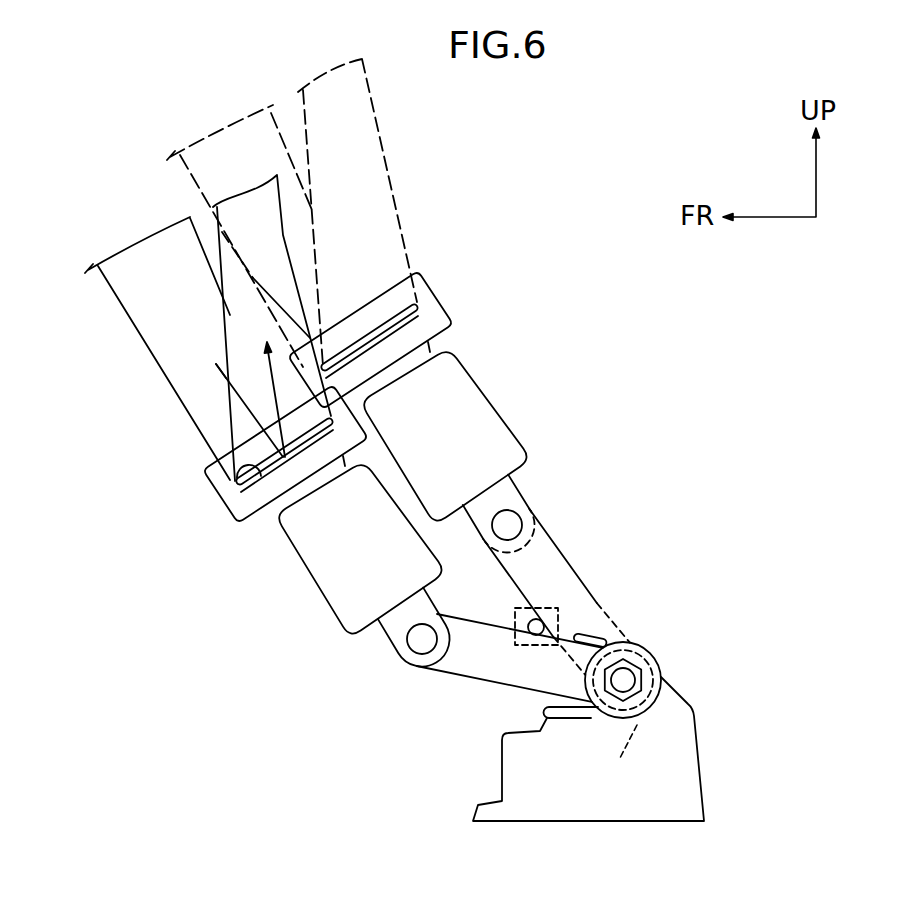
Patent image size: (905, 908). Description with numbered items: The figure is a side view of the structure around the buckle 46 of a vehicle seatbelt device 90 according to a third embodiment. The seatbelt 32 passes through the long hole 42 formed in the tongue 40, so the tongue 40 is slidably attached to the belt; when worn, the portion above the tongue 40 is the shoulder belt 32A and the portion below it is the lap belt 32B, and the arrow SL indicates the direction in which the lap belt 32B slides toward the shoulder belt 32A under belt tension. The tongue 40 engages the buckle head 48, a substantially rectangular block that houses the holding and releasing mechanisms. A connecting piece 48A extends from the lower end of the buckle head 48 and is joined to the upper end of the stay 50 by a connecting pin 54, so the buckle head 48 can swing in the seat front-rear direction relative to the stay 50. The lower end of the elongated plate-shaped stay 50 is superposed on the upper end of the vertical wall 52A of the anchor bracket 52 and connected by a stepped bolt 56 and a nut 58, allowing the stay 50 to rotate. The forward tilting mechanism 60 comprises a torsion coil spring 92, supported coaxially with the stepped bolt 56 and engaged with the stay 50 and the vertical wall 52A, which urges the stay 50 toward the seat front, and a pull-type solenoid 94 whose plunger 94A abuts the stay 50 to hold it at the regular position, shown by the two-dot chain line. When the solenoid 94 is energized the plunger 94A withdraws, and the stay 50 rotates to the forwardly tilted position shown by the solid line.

The seatbelt 32 is at (255, 270).
The shoulder belt 32A is at (383, 187).
The lap belt 32B is at (195, 187).
The arrow SL is at (217, 367).
The tongue 40 is at (221, 505).
The long hole 42 is at (203, 477).
The buckle 46 is at (479, 383).
The buckle head 48 is at (422, 493).
The connecting piece 48A is at (525, 497).
The stay 50 is at (573, 566).
The anchor bracket 52 is at (588, 782).
The vertical wall 52A is at (620, 800).
The connecting pin 54 is at (513, 520).
The stepped bolt 56 is at (630, 680).
The nut 58 is at (637, 653).
The forward tilting mechanism 60 is at (585, 680).
The vehicle seatbelt device 90 is at (663, 410).
The torsion coil spring 92 is at (649, 759).
The solenoid 94 is at (585, 606).
The plunger 94A is at (515, 613).